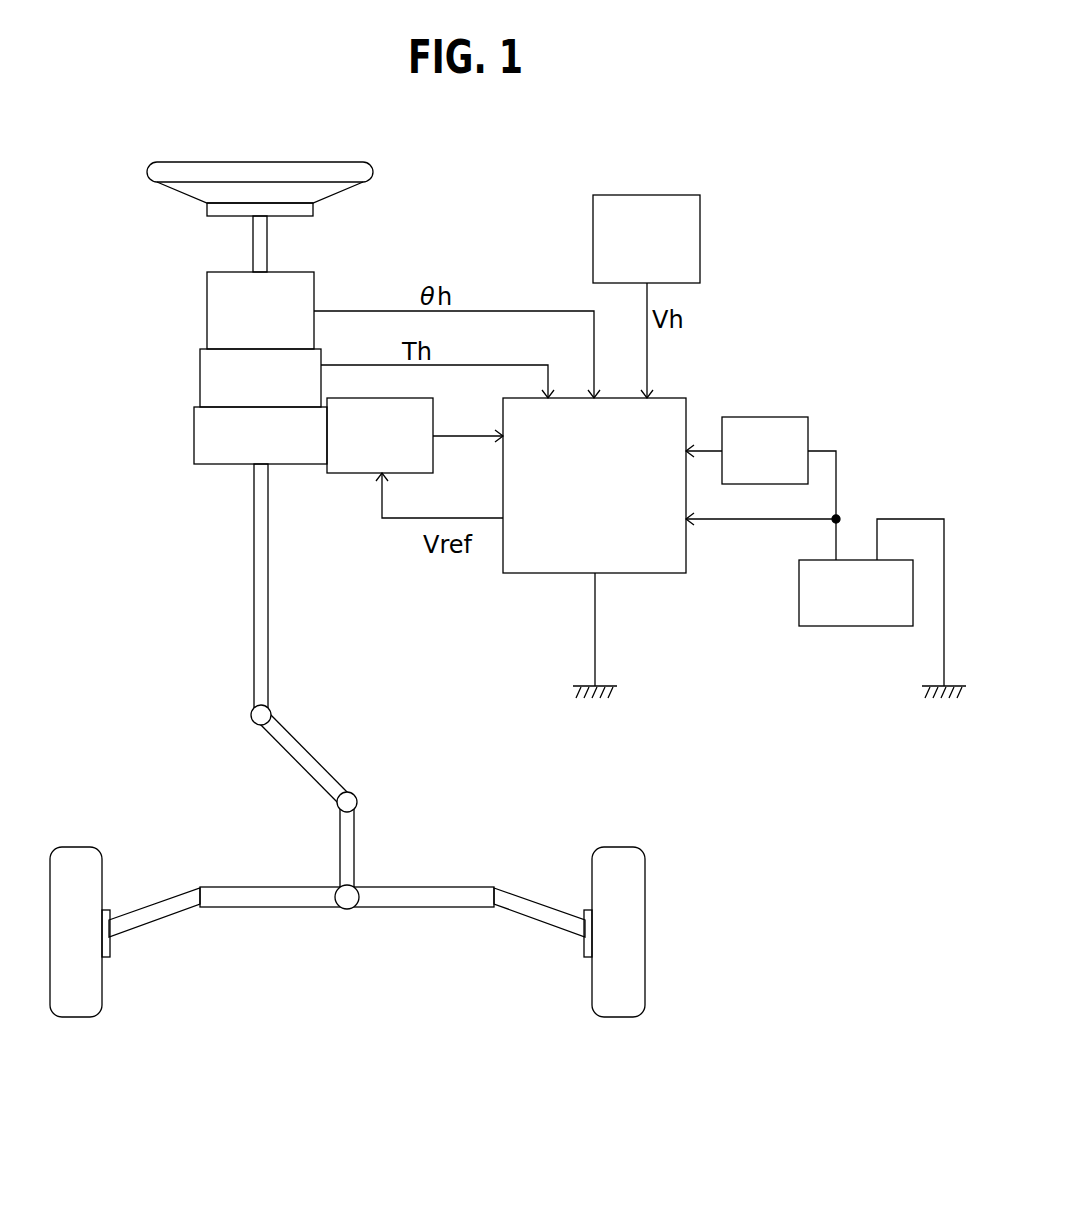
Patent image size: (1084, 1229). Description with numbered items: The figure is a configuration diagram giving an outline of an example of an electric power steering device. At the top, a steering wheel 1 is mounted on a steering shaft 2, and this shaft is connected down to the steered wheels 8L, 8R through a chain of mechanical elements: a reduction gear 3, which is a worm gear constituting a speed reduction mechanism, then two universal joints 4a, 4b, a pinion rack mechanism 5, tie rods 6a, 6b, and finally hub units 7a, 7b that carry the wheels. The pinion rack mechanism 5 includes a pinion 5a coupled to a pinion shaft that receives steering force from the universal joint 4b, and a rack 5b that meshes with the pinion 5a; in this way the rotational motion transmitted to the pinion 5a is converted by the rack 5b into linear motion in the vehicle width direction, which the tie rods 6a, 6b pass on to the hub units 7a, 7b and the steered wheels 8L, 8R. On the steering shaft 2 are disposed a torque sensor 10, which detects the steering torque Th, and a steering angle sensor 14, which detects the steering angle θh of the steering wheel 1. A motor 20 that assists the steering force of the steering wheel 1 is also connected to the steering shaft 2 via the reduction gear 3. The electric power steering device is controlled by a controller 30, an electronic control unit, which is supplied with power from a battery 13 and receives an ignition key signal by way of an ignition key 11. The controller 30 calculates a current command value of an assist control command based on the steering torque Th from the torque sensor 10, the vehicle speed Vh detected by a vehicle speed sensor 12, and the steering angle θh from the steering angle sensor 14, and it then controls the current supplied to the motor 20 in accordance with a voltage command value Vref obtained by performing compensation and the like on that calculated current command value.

The steering wheel 1 is at (345, 162).
The steering shaft 2 is at (253, 246).
The steering angle sensor 14 is at (207, 312).
The torque sensor 10 is at (200, 382).
The reduction gear 3 is at (194, 440).
The motor 20 is at (350, 475).
The controller 30 is at (675, 398).
The vehicle speed sensor 12 is at (661, 195).
The ignition key 11 is at (772, 417).
The battery 13 is at (836, 626).
The universal joint 4a is at (251, 715).
The universal joint 4b is at (357, 800).
The pinion rack mechanism 5 is at (347, 954).
The pinion 5a is at (342, 910).
The rack 5b is at (265, 907).
The tie rod 6a is at (165, 900).
The tie rod 6b is at (528, 900).
The hub unit 7a is at (112, 945).
The hub unit 7b is at (582, 945).
The steered wheel 8L is at (75, 1017).
The steered wheel 8R is at (620, 1017).